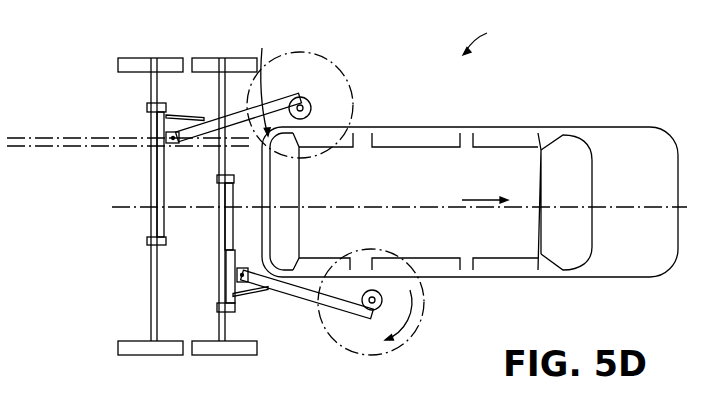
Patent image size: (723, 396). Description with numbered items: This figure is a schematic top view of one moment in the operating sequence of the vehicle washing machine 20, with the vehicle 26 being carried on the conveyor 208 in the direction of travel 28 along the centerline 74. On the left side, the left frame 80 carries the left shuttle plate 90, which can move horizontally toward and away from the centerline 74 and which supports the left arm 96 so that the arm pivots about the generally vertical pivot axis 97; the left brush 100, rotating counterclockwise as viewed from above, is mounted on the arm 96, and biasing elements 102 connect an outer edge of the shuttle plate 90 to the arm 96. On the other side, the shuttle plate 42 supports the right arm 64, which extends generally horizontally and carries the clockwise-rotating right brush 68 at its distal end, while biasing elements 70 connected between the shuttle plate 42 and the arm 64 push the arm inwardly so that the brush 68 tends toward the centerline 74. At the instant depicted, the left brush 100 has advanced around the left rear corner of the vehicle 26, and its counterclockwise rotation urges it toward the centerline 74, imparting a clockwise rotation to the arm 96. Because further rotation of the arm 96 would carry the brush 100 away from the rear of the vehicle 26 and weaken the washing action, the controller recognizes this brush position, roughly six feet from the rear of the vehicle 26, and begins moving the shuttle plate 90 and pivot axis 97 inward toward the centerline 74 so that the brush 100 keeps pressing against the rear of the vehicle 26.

The vehicle washing machine 20 is at (480, 32).
The vehicle 26 is at (415, 197).
The direction of travel 28 is at (478, 200).
The shuttle plate 42 is at (237, 277).
The right arm 64 is at (318, 289).
The right brush 68 is at (425, 298).
The biasing elements 70 is at (245, 298).
The centerline 74 is at (613, 209).
The left frame 80 is at (154, 266).
The left shuttle plate 90 is at (158, 125).
The left arm 96 is at (239, 84).
The pivot axis 97 is at (175, 143).
The left brush 100 is at (312, 53).
The biasing elements 102 is at (183, 116).
The conveyor 208 is at (33, 138).